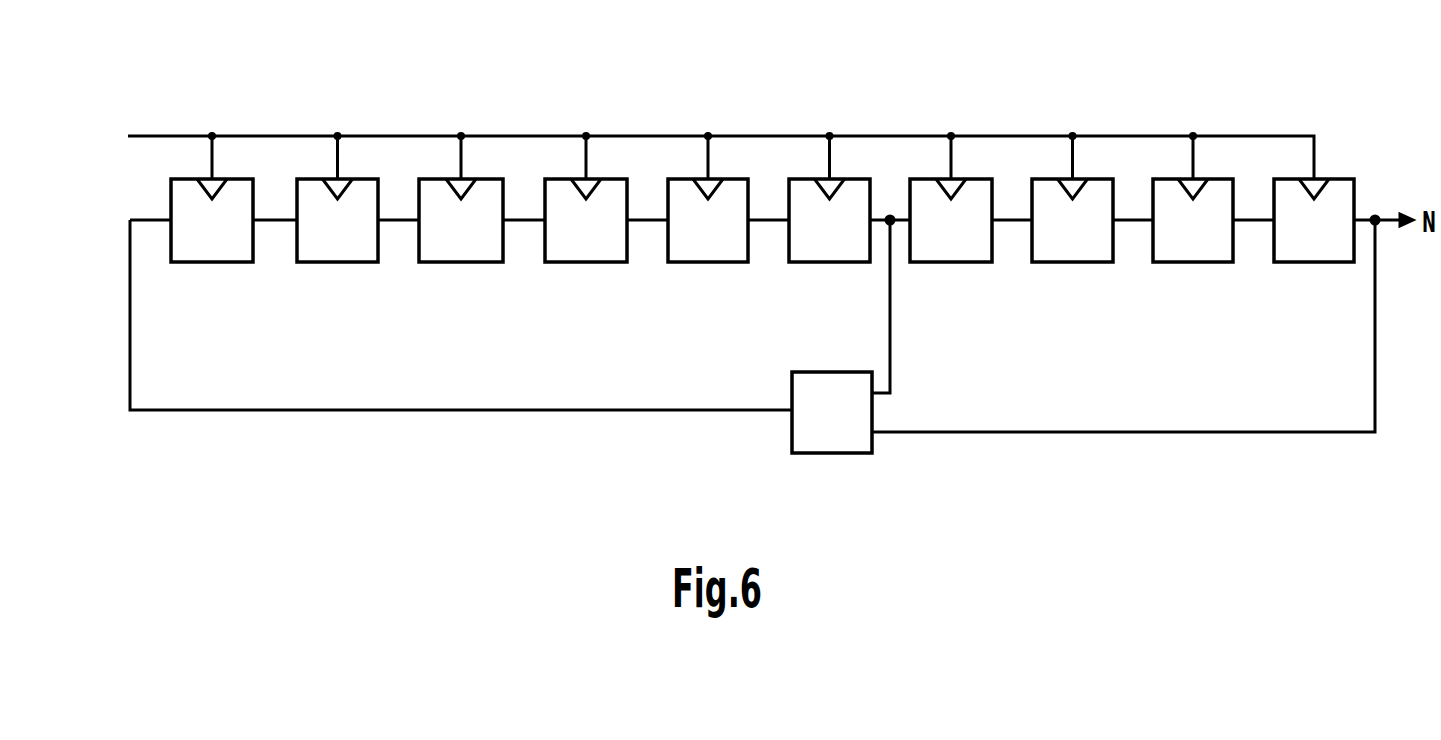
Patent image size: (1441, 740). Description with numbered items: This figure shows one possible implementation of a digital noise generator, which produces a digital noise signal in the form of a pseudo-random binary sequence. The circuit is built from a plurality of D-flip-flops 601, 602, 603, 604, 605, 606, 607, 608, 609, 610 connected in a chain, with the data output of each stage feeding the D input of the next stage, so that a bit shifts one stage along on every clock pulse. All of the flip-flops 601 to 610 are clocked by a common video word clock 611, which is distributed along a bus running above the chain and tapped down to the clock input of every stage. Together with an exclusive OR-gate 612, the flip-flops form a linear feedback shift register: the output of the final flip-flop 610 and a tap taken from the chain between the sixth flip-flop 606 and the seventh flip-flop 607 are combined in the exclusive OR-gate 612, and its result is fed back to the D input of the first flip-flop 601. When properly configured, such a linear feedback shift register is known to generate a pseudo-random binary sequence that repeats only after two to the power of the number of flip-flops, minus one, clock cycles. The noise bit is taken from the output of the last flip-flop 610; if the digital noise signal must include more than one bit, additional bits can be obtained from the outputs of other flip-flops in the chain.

The D-flip-flop 601 is at (232, 263).
The D-flip-flop 602 is at (357, 263).
The D-flip-flop 603 is at (482, 263).
The D-flip-flop 604 is at (606, 263).
The D-flip-flop 605 is at (728, 263).
The D-flip-flop 606 is at (849, 263).
The D-flip-flop 607 is at (971, 263).
The D-flip-flop 608 is at (1092, 263).
The D-flip-flop 609 is at (1212, 263).
The D-flip-flop 610 is at (1333, 263).
The video word clock 611 is at (150, 97).
The exclusive OR-gate 612 is at (852, 453).